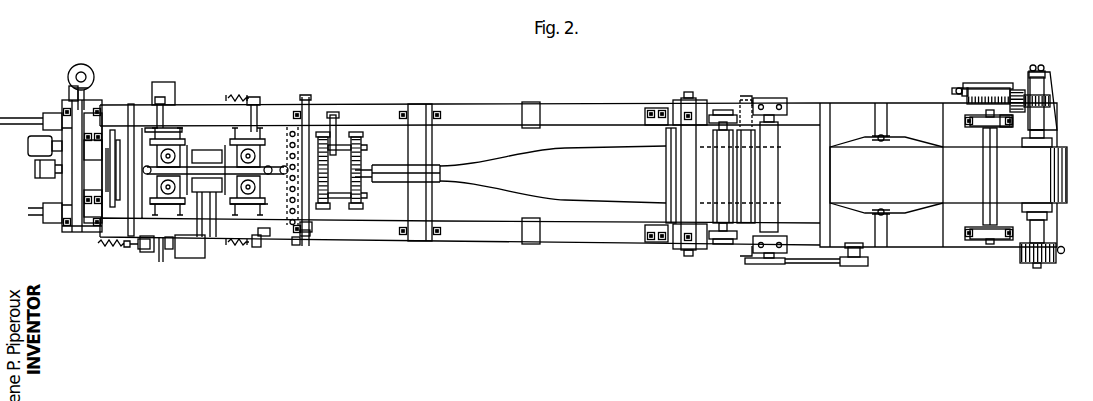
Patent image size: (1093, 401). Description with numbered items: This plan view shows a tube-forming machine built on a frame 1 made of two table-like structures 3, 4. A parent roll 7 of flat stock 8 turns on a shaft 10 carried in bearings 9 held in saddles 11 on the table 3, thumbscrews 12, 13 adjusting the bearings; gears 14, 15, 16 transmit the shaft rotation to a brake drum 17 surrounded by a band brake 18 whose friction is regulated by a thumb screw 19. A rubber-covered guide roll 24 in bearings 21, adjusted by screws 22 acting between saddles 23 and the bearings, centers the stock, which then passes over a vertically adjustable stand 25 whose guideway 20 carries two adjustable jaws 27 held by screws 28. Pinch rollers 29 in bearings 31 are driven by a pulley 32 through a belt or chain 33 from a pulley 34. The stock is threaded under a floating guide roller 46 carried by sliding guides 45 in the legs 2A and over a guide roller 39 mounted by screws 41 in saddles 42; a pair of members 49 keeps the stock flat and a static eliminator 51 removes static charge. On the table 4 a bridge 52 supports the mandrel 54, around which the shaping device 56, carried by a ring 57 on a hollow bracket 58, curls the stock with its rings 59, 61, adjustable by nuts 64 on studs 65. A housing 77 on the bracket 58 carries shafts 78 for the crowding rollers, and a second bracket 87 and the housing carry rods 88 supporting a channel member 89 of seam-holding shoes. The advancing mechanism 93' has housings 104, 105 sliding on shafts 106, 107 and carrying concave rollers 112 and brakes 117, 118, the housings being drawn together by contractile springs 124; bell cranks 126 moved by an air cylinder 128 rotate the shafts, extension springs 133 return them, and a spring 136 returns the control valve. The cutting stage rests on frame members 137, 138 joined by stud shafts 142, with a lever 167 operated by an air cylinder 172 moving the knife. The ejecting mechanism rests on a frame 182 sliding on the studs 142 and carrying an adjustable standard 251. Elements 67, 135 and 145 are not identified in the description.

The frame 1 is at (516, 106).
The legs 2A is at (746, 96).
The table 3 is at (624, 104).
The table 4 is at (378, 108).
The parent roll 7 is at (1060, 152).
The flat stock 8 is at (612, 186).
The bearings 9 is at (1045, 86).
The shaft 10 is at (1035, 268).
The saddles 11 is at (1050, 75).
The thumbscrew 12 is at (1062, 254).
The thumbscrew 13 is at (1037, 65).
The gear 14 is at (1050, 102).
The gear 15 is at (1015, 90).
The gear 16 is at (966, 99).
The brake drum 17 is at (985, 83).
The brake 18 is at (966, 87).
The thumb screw 19 is at (956, 88).
The guideway 20 is at (880, 103).
The bearings 21 is at (987, 126).
The screws 22 is at (970, 128).
The saddles 23 is at (1001, 128).
The guide roll 24 is at (983, 216).
The stand 25 is at (827, 103).
The adjustable jaws 27 is at (858, 138).
The screws 28 is at (888, 138).
The pinch rollers 29 is at (779, 137).
The bearings 31 is at (778, 98).
The pulley 32 is at (762, 265).
The belt or chain 33 is at (812, 265).
The pulley 34 is at (852, 267).
The guide roller 39 is at (718, 140).
The screws 41 is at (694, 99).
The saddles 42 is at (723, 114).
The sliding guides 45 is at (752, 100).
The floating guide roller 46 is at (746, 180).
The members 49 is at (656, 243).
The static eliminator 51 is at (665, 139).
The bridge 52 is at (433, 148).
The mandrel 54 is at (370, 180).
The shaping device 56 is at (360, 146).
The ring 57 is at (324, 136).
The hollow bracket 58 is at (306, 104).
The ring 59 is at (363, 150).
The ring 61 is at (325, 210).
The nuts 64 is at (362, 198).
The studs 65 is at (356, 210).
The rod 67 is at (336, 120).
The housing 77 is at (311, 222).
The shafts 78 is at (286, 135).
The second bracket 87 is at (133, 105).
The rods 88 is at (154, 128).
The channel member 89 is at (186, 166).
The advancing mechanism 93' is at (241, 219).
The housing 104 is at (258, 98).
The housing 105 is at (172, 206).
The shaft 106 is at (293, 228).
The shaft 107 is at (161, 262).
The rollers 112 is at (169, 250).
The brake 117 is at (222, 150).
The brake 118 is at (207, 250).
The contractile springs 124 is at (306, 249).
The bell crank 126 is at (149, 253).
The air cylinder 128 is at (137, 246).
The extension springs 133 is at (237, 95).
The box 135 is at (190, 258).
The spring 136 is at (106, 247).
The frame member 137 is at (64, 120).
The frame member 138 is at (96, 112).
The stud shafts 142 is at (10, 117).
The disc 145 is at (116, 133).
The lever 167 is at (70, 90).
The air cylinder 172 is at (81, 64).
The frame 182 is at (55, 228).
The standard 251 is at (38, 164).